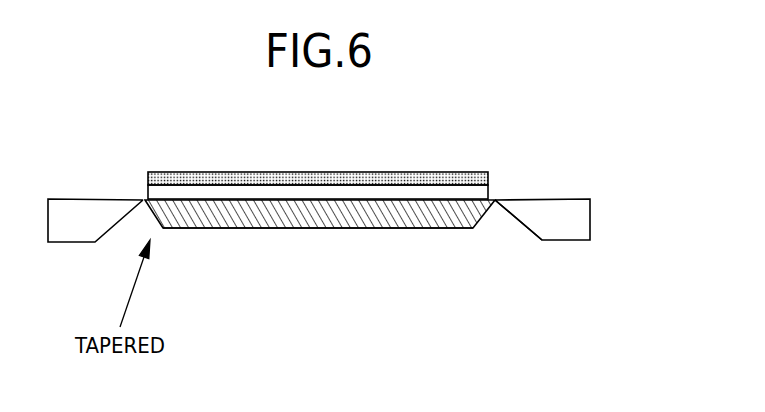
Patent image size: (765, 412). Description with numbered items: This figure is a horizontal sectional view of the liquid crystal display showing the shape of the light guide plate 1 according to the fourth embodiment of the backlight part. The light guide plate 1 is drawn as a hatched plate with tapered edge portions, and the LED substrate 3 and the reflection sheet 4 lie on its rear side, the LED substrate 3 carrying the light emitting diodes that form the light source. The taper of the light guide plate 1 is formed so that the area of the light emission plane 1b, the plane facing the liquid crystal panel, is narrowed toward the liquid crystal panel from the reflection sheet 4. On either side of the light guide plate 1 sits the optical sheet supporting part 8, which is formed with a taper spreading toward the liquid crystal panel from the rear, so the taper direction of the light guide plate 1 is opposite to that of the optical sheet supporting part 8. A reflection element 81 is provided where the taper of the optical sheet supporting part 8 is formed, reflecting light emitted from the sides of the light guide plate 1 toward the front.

The light guide plate 1 is at (420, 210).
The light emission plane 1b is at (360, 228).
The LED substrate 3 is at (343, 178).
The reflection sheet 4 is at (267, 195).
The optical sheet supporting part 8 is at (548, 208).
The reflection element 81 is at (515, 222).